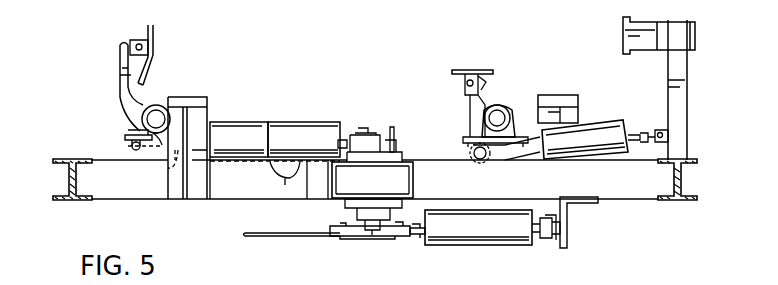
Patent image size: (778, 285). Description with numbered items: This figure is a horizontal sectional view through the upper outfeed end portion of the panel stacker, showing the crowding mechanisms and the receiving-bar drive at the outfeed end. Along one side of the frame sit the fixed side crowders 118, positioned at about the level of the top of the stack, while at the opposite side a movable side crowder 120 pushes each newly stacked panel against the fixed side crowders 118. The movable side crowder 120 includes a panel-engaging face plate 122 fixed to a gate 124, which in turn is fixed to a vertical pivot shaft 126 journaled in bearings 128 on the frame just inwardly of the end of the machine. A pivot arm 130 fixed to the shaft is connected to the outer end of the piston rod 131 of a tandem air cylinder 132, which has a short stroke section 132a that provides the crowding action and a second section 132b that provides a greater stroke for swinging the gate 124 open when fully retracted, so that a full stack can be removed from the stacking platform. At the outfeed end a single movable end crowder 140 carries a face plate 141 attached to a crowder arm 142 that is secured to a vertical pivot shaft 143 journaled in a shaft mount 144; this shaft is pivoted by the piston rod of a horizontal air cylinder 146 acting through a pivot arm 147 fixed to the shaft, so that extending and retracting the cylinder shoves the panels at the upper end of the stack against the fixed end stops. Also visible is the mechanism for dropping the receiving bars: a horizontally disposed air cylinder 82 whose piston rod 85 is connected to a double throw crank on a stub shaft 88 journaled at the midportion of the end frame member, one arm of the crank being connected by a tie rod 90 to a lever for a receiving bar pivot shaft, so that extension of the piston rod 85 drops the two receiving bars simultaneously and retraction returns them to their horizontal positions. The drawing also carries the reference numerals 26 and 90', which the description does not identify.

The frame I-beam 26 is at (68, 200).
The air cylinder 82 is at (496, 247).
The piston rod 85 is at (418, 238).
The stub shaft 88 is at (372, 237).
The tie rod 90 is at (365, 238).
The knife blade 90' is at (292, 220).
The fixed side crowders 118 is at (621, 28).
The movable side crowders 120 is at (134, 87).
The face plate 122 is at (154, 30).
The gate 124 is at (120, 76).
The vertical pivot shaft 126 is at (145, 104).
The bearings 128 is at (160, 106).
The pivot arm 130 is at (135, 130).
The piston rod 131 is at (166, 170).
The tandem air cylinder 132 is at (279, 151).
The short stroke section 132a is at (291, 106).
The long stroke section 132b is at (243, 122).
The movable end crowder 140 is at (496, 106).
The face plate 141 is at (472, 93).
The crowder arm 142 is at (490, 105).
The vertical pivot shaft 143 is at (512, 108).
The shaft mount 144 is at (481, 121).
The horizontal air cylinder 146 is at (598, 127).
The pivot arm 147 is at (470, 149).